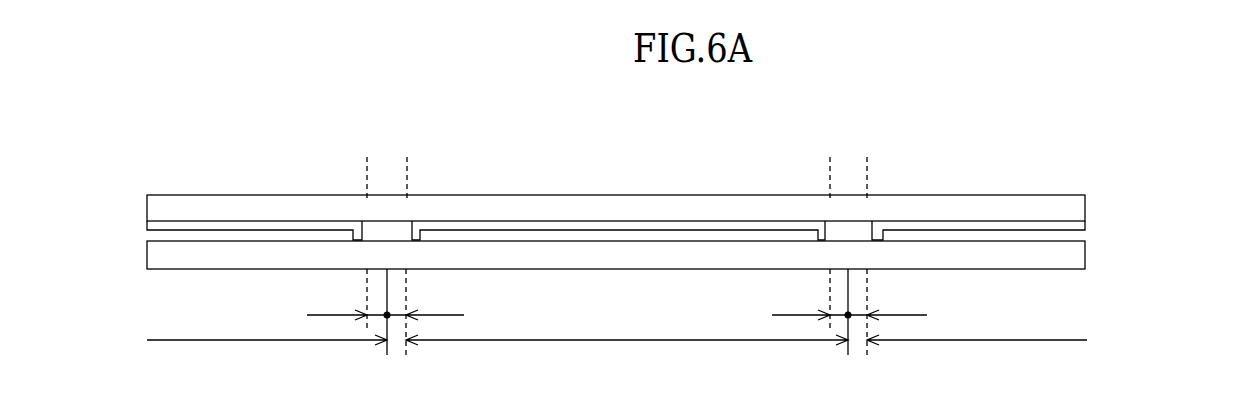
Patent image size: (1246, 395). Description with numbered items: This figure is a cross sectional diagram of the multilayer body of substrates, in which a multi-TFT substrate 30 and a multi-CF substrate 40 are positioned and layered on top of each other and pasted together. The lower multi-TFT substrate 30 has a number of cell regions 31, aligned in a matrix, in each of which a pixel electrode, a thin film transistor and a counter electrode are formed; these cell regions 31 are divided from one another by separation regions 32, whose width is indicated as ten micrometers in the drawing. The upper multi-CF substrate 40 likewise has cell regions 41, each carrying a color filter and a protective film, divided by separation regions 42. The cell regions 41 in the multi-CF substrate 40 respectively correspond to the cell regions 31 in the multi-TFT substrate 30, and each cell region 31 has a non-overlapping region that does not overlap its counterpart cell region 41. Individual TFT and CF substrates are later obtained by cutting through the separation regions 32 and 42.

The multi-TFT substrate 30 is at (1097, 277).
The cell regions 31 is at (617, 331).
The separation regions 32 is at (608, 312).
The multi-CF substrate 40 is at (1098, 196).
The cell regions 41 is at (355, 175).
The separation regions 42 is at (383, 170).